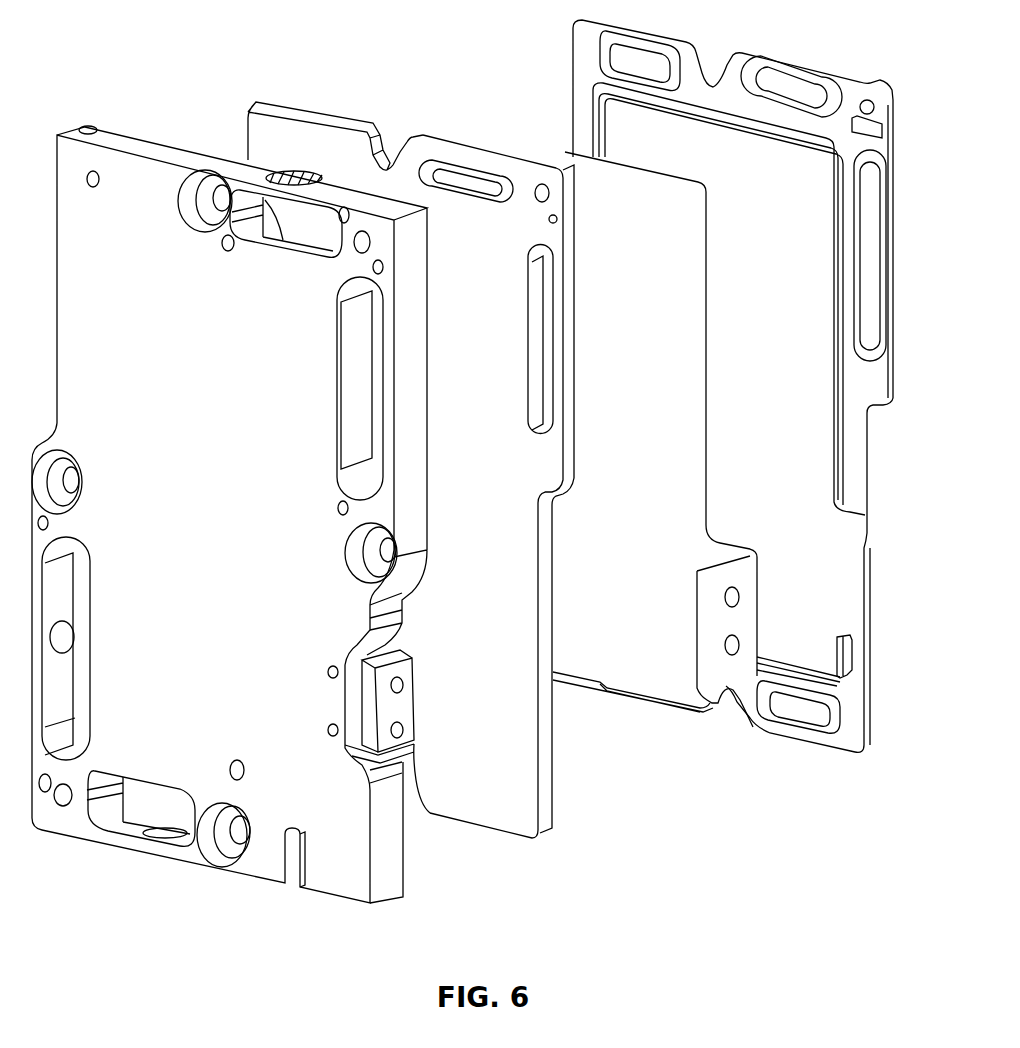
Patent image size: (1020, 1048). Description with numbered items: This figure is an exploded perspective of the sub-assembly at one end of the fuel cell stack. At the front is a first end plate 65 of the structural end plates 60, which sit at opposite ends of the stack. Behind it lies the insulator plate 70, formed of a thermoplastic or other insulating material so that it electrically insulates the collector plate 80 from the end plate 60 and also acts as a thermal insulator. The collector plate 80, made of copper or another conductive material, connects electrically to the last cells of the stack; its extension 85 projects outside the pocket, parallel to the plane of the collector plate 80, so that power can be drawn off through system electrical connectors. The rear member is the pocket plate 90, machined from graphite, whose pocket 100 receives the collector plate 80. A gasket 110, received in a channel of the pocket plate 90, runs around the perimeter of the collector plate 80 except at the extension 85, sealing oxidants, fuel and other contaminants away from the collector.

The structural end plate 60 is at (195, 632).
The first end plate 65 is at (157, 416).
The insulator plate 70 is at (467, 572).
The collector plate 80 is at (617, 530).
The extension 85 is at (707, 625).
The pocket plate 90 is at (760, 437).
The pocket 100 is at (748, 294).
The gasket 110 is at (840, 682).